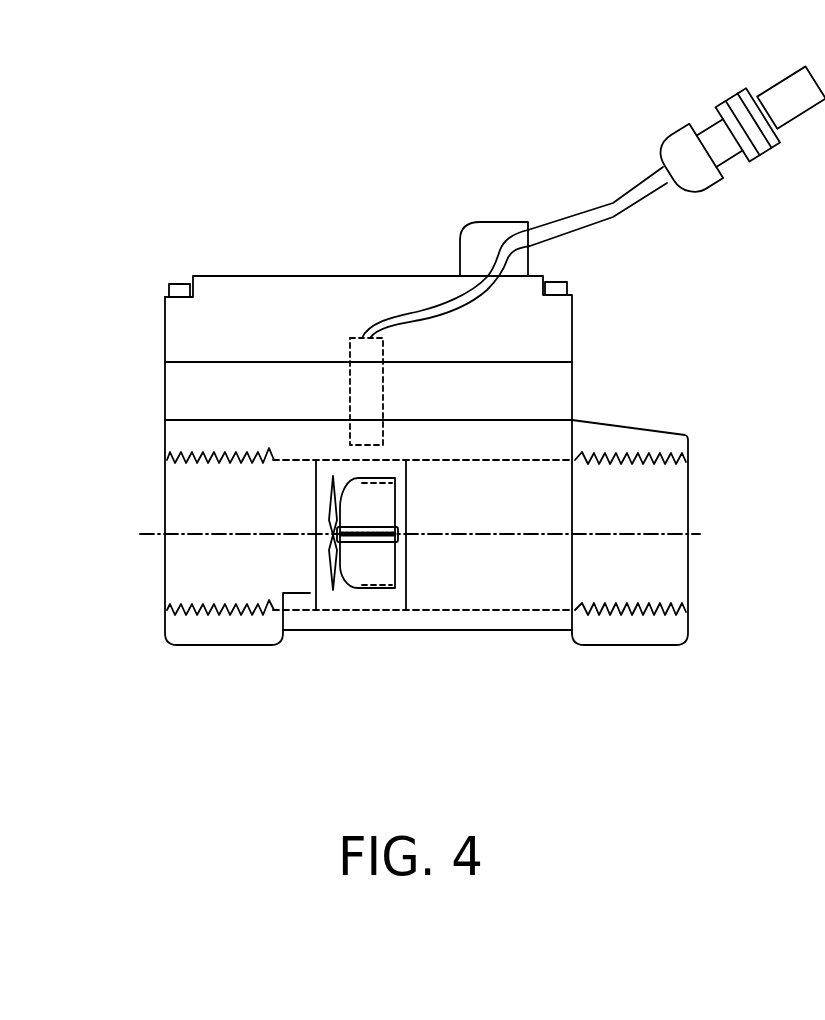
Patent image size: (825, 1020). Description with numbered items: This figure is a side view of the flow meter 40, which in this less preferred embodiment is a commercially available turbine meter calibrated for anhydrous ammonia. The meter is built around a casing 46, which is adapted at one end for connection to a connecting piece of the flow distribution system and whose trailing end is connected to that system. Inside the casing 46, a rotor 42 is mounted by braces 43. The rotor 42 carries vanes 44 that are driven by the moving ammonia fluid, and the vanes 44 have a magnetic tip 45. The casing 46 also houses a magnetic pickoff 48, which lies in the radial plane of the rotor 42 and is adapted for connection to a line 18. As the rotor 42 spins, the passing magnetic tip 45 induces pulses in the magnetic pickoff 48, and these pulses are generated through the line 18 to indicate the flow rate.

The line 18 is at (573, 223).
The flow meter 40 is at (675, 403).
The rotor 42 is at (343, 600).
The braces 43 is at (331, 561).
The vanes 44 is at (375, 563).
The magnetic tip 45 is at (372, 585).
The casing 46 is at (182, 635).
The magnetic pickoff 48 is at (370, 390).